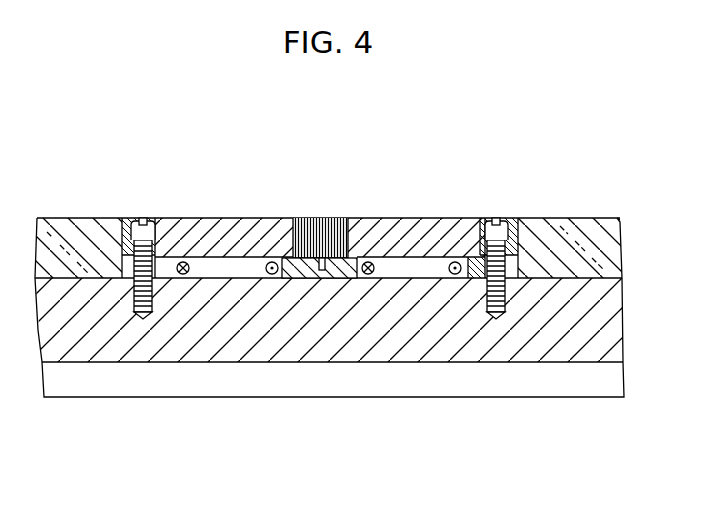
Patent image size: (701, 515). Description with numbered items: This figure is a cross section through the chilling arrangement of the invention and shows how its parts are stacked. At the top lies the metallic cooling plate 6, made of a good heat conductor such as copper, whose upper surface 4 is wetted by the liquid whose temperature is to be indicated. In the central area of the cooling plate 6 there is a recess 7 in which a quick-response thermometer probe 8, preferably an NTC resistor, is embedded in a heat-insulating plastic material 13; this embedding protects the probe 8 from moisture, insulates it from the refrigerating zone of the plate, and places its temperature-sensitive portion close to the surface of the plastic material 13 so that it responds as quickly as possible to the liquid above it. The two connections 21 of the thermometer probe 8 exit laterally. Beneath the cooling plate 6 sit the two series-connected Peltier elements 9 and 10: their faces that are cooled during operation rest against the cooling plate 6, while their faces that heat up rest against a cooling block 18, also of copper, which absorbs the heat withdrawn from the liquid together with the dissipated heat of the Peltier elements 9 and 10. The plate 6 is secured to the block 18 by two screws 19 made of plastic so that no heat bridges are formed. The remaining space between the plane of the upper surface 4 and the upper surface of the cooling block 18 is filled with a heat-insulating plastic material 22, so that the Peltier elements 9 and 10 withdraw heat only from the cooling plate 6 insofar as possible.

The upper surface 4 is at (175, 218).
The cooling plate 6 is at (441, 232).
The recess 7 is at (310, 218).
The thermometer probe 8 is at (322, 272).
The Peltier element 9 is at (240, 272).
The Peltier element 10 is at (408, 272).
The heat-insulating plastic material 13 is at (339, 222).
The cooling block 18 is at (440, 350).
The screws 19 is at (134, 299).
The connections 21 is at (320, 279).
The heat-insulating plastic material 22 is at (566, 243).